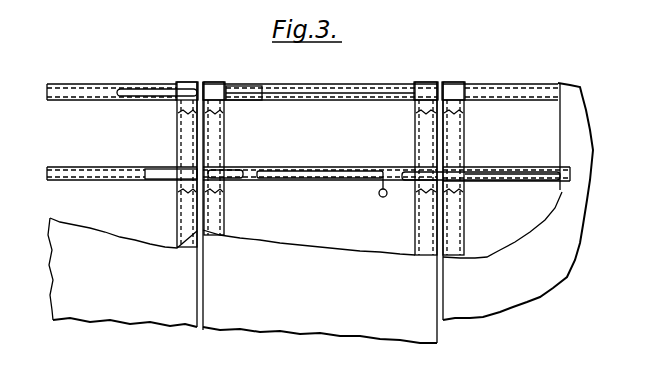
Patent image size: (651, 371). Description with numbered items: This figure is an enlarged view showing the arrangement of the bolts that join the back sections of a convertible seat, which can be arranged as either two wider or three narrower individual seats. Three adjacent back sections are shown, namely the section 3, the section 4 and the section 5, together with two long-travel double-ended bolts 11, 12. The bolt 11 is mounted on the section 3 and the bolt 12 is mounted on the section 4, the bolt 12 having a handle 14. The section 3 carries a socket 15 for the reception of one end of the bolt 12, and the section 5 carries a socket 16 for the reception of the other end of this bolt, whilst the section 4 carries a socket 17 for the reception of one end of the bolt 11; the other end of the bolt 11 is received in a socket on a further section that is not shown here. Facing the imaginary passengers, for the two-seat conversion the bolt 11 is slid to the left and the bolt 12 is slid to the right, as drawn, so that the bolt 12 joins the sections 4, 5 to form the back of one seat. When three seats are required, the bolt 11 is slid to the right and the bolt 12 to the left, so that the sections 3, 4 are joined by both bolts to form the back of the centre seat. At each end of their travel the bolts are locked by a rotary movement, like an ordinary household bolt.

The section 3 is at (111, 128).
The section 4 is at (317, 120).
The section 5 is at (510, 120).
The bolt 11 is at (157, 88).
The bolt 12 is at (232, 178).
The handle 14 is at (379, 197).
The socket 15 is at (148, 182).
The socket 16 is at (532, 183).
The socket 17 is at (248, 87).